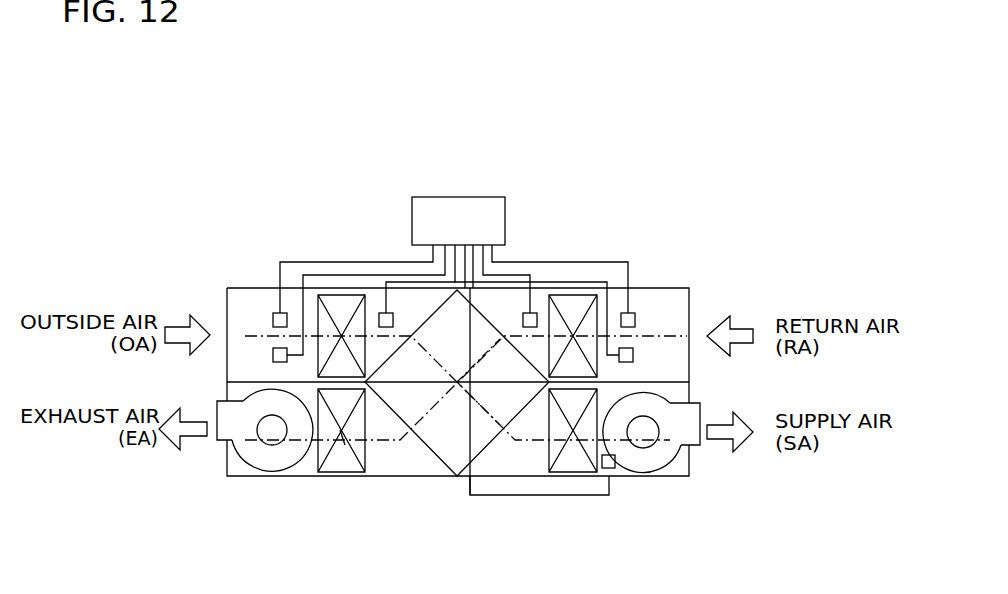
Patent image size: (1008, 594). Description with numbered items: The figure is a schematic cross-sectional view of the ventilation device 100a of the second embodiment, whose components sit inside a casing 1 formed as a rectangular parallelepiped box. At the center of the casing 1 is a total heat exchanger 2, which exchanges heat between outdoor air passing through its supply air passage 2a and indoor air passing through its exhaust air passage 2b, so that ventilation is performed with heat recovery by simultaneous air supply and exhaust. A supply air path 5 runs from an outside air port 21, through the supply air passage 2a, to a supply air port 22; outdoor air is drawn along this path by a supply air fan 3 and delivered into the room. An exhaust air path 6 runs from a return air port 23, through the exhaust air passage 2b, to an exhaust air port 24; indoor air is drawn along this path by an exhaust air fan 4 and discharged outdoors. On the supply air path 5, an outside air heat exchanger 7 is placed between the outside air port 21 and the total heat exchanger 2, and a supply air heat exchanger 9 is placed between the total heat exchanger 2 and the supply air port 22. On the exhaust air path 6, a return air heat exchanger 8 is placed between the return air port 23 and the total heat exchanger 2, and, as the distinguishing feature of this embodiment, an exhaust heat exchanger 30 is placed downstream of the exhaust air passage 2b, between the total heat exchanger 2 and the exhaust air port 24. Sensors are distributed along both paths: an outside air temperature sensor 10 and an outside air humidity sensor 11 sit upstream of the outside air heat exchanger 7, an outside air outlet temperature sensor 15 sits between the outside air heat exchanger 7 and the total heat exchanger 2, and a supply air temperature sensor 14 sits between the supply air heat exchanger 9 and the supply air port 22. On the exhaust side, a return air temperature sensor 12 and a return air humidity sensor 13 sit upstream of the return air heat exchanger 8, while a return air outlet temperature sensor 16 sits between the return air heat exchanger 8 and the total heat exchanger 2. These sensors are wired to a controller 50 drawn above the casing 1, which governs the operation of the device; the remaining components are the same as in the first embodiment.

The ventilation device 100a is at (197, 143).
The casing 1 is at (228, 288).
The total heat exchanger 2 is at (428, 470).
The supply air passage 2a is at (485, 413).
The exhaust air passage 2b is at (479, 356).
The supply air fan 3 is at (658, 470).
The exhaust air fan 4 is at (250, 467).
The supply air path 5 is at (533, 440).
The exhaust air path 6 is at (348, 458).
The outside air heat exchanger 7 is at (348, 295).
The return air heat exchanger 8 is at (608, 262).
The supply air heat exchanger 9 is at (577, 472).
The outside air temperature sensor 10 is at (278, 260).
The outside air humidity sensor 11 is at (404, 272).
The return air temperature sensor 12 is at (553, 293).
The return air humidity sensor 13 is at (620, 282).
The supply air temperature sensor 14 is at (597, 496).
The outside air outlet temperature sensor 15 is at (388, 272).
The return air outlet temperature sensor 16 is at (547, 280).
The outside air port 21 is at (228, 312).
The supply air port 22 is at (700, 445).
The return air port 23 is at (689, 322).
The exhaust air port 24 is at (217, 441).
The exhaust heat exchanger 30 is at (333, 471).
The controller 50 is at (475, 197).